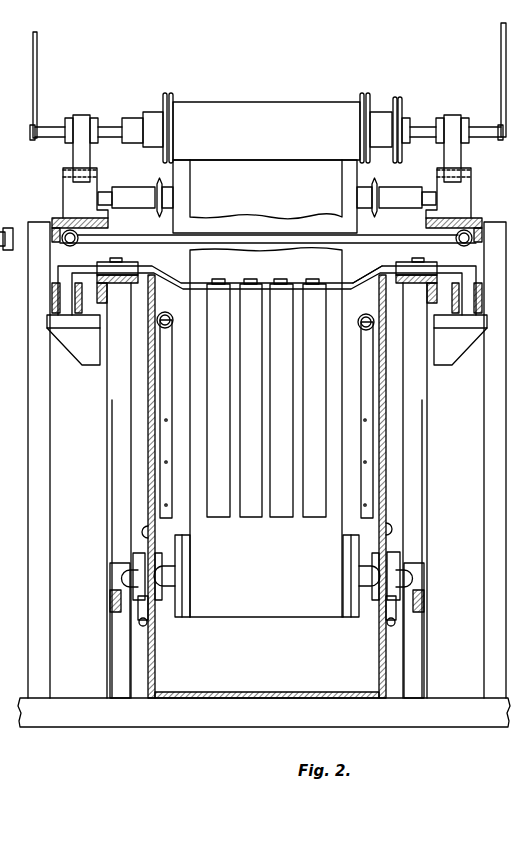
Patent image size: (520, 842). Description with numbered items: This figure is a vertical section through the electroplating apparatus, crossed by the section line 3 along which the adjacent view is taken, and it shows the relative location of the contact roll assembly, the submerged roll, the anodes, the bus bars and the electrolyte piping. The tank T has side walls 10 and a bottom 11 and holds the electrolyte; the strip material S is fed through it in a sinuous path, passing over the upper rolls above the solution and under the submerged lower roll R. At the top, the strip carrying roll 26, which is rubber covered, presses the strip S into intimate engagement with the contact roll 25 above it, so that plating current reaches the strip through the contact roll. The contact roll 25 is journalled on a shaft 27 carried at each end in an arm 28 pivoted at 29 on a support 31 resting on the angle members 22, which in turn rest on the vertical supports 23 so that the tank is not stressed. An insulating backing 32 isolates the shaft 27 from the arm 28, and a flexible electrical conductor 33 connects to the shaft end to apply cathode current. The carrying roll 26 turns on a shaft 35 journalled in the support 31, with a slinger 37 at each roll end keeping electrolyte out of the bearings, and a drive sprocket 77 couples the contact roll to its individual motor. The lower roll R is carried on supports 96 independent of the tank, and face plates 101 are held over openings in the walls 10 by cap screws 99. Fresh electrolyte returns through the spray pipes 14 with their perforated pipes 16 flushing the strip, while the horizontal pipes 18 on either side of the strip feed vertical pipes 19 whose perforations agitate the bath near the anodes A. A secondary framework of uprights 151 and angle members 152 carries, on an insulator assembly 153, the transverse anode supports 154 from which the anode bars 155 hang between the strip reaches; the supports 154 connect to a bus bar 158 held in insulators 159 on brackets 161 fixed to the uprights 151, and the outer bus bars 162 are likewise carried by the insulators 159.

The section line 3— 3 is at (171, 753).
The side walls 10 is at (147, 429).
The bottom 11 is at (306, 691).
The spray pipes 14 is at (64, 248).
The perforated pipes 16 is at (409, 235).
The horizontal pipe 18 is at (164, 317).
The vertical pipes 19 is at (163, 465).
The angle members 22 is at (62, 218).
The vertical supports 23 is at (484, 512).
The contact roll 25 is at (283, 103).
The strip carrying roll 26 is at (176, 223).
The shaft 27 is at (423, 127).
The arm 28 is at (83, 117).
The pivot 29 is at (63, 172).
The support 31 is at (99, 191).
The insulating backing 32 is at (470, 141).
The electrical conductor 33 is at (37, 68).
The shaft 35 is at (388, 188).
The slinger 37 is at (159, 183).
The drive sprocket 77 is at (398, 97).
The supports 96 is at (418, 600).
The cap screws 99 is at (142, 625).
The face plates 101 is at (149, 627).
The uprights 151 is at (113, 540).
The angle members 152 is at (129, 283).
The insulator assembly 153 is at (396, 268).
The anode supports 154 is at (203, 281).
The anode bars 155 is at (223, 518).
The bus bar 158 is at (79, 316).
The insulators 159 is at (50, 316).
The brackets 161 is at (72, 360).
The bus bars 162 is at (52, 290).
The strip material S is at (264, 637).
The lower rolls R is at (349, 614).
The anodes A is at (300, 518).
The tank T is at (150, 508).